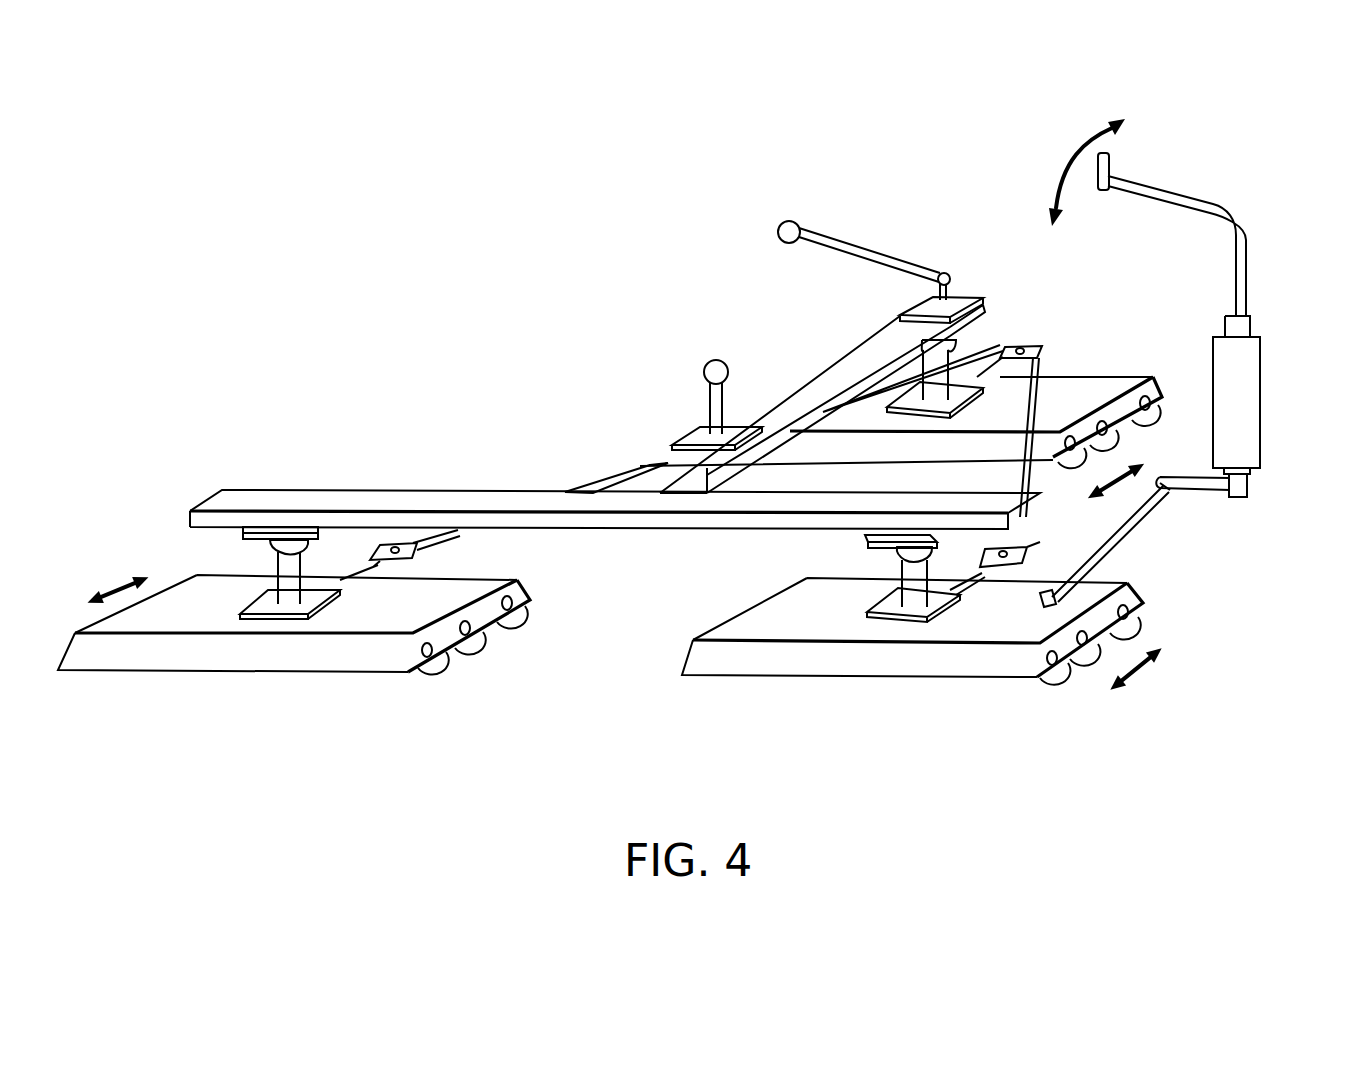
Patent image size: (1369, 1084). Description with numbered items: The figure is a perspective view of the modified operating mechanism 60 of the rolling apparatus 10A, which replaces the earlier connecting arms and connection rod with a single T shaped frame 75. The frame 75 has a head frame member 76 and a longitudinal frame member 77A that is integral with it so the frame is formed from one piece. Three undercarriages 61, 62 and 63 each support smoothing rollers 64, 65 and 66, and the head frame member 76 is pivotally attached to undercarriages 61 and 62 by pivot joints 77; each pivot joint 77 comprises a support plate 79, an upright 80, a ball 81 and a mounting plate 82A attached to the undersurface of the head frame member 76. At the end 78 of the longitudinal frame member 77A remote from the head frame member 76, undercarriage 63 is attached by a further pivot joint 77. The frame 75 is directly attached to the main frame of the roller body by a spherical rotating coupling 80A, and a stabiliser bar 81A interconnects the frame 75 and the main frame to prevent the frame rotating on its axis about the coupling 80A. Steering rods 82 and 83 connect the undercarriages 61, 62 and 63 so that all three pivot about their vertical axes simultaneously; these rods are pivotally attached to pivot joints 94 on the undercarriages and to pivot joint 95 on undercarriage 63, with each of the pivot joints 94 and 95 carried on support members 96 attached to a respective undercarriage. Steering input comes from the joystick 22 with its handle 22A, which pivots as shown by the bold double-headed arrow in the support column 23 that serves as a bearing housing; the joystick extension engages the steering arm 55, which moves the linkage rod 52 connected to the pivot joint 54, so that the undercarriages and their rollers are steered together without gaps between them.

The rolling apparatus 10A is at (284, 238).
The joystick 22 is at (1215, 215).
The handle 22A is at (1110, 163).
The support column 23 is at (1245, 385).
The linkage rod 52 is at (1128, 532).
The pivot joint 54 is at (1049, 590).
The steering arm 55 is at (1207, 491).
The operating mechanism 60 is at (1270, 228).
The undercarriage 61 is at (278, 655).
The undercarriage 62 is at (885, 660).
The undercarriage 63 is at (1048, 385).
The smoothing roller 64 is at (430, 668).
The smoothing roller 65 is at (467, 642).
The smoothing roller 66 is at (512, 626).
The T shaped frame 75 is at (597, 432).
The head frame member 76 is at (388, 503).
The pivot joint 77 is at (1000, 335).
The longitudinal frame member 77A is at (803, 392).
The end 78 is at (993, 305).
The support plate 79 is at (243, 650).
The upright 80 is at (235, 581).
The spherical rotating coupling 80A is at (715, 374).
The ball 81 is at (260, 545).
The stabiliser bar 81A is at (877, 260).
The steering rod 82 is at (580, 480).
The mounting plate 82A is at (277, 530).
The steering rod 83 is at (1090, 393).
The pivot joint 94 is at (420, 551).
The pivot joint 95 is at (1050, 342).
The support member 96 is at (373, 567).